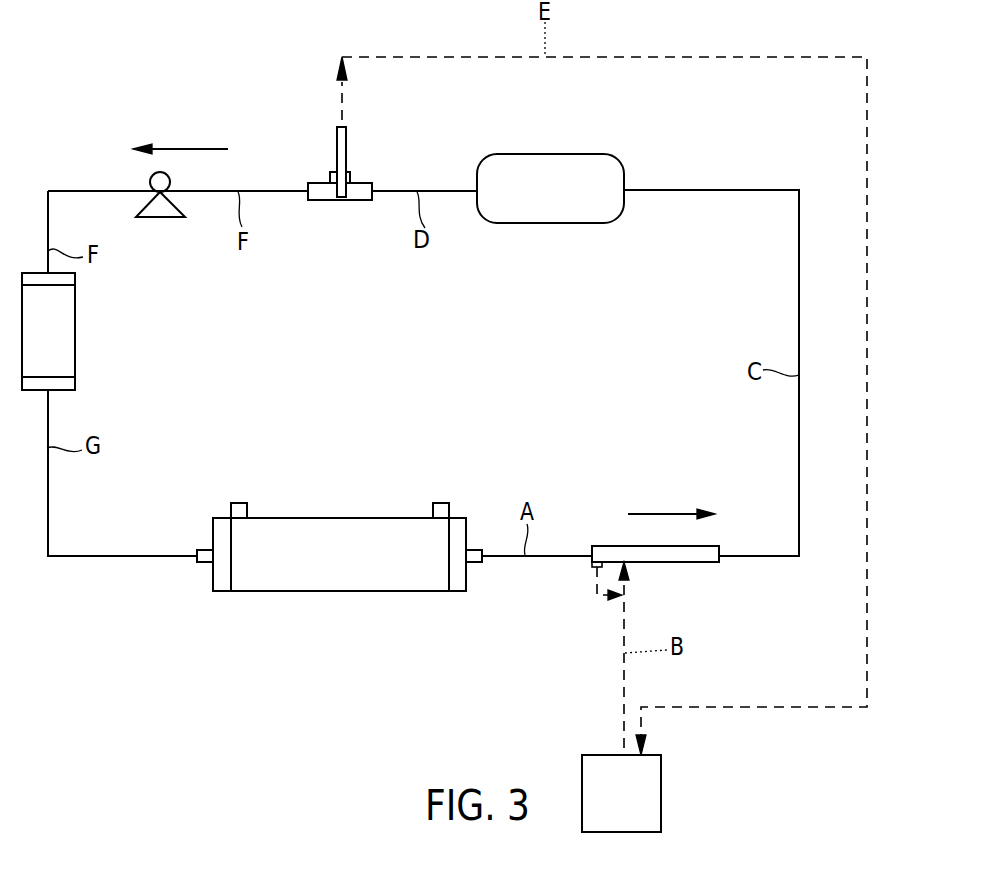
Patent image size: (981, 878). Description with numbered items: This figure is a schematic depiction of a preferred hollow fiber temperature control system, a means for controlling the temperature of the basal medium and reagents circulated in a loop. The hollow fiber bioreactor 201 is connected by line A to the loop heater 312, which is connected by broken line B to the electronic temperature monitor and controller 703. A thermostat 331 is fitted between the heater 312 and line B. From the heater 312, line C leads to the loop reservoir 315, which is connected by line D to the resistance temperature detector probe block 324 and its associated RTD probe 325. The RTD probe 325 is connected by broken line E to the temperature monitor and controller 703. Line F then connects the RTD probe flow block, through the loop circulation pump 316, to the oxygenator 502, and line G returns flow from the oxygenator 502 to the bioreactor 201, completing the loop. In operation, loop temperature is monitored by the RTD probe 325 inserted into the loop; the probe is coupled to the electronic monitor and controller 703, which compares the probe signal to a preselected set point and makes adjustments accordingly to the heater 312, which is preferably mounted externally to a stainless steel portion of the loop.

The hollow fiber bioreactor 201 is at (352, 575).
The loop heater 312 is at (670, 563).
The loop reservoir 315 is at (570, 205).
The loop circulation pump 316 is at (160, 218).
The resistance temperature detector (RTD) probe block 324 is at (342, 201).
The RTD probe 325 is at (346, 145).
The thermostat 331 is at (592, 565).
The oxygenator 502 is at (70, 348).
The electronic temperature monitor and controller 703 is at (645, 813).